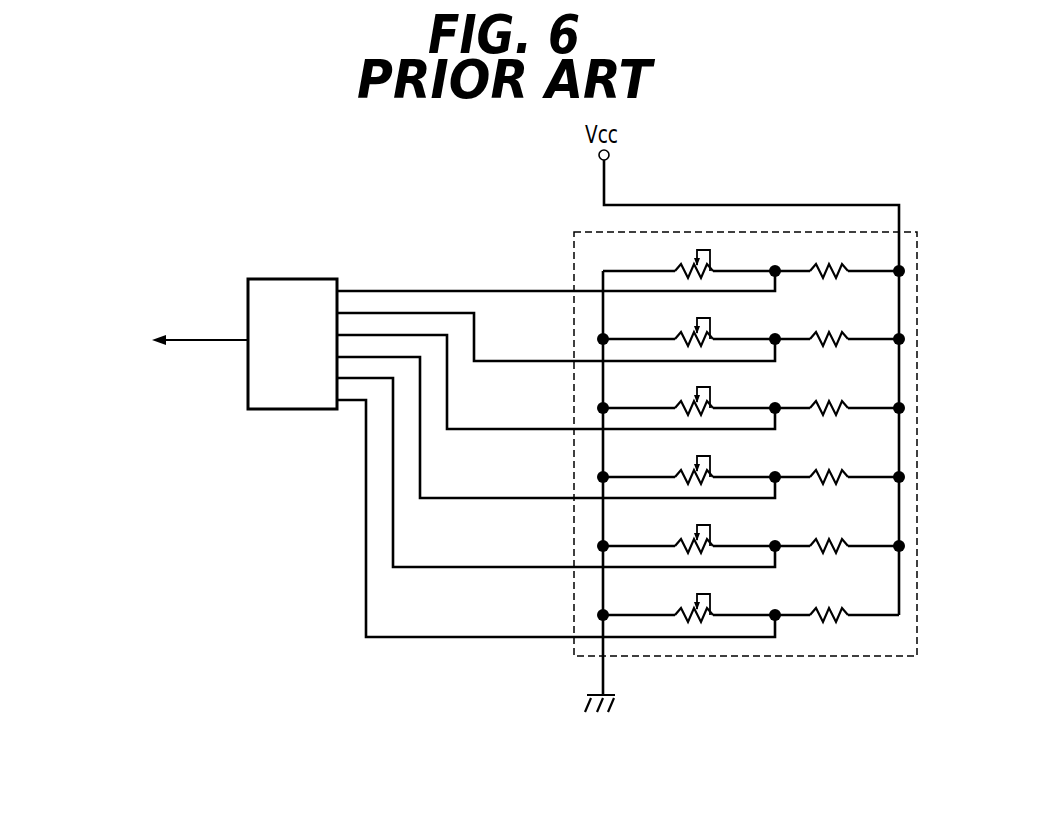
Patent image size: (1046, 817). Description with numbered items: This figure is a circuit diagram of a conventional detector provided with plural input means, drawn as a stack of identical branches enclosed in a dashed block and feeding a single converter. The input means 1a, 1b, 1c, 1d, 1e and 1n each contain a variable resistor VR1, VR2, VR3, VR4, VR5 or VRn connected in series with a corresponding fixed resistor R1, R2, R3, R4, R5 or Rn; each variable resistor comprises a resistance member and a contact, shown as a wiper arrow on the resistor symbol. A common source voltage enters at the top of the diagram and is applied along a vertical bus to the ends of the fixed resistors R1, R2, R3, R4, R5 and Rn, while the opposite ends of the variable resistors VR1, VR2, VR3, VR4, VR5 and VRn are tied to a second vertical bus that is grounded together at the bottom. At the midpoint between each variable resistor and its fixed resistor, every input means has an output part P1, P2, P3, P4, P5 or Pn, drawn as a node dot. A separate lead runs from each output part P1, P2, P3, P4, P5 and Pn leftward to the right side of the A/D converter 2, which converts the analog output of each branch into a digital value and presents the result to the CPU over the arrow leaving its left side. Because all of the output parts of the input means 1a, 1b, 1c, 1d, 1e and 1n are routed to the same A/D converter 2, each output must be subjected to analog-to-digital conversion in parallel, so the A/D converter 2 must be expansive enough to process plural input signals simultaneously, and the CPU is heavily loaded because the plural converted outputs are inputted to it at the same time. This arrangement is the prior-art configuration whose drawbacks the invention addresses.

The A/D converter 2 is at (312, 279).
The input means 1a is at (621, 271).
The input means 1b is at (621, 339).
The input means 1c is at (621, 389).
The input means 1d is at (621, 437).
The fifth variable resistor circuit (sensor unit) 1e is at (621, 480).
The input means 1n is at (618, 525).
The variable resistor VR1 is at (680, 257).
The variable resistor VR2 is at (680, 325).
The variable resistor VR3 is at (680, 394).
The variable resistor 4 VR4 is at (680, 463).
The variable resistor 5 VR5 is at (680, 532).
The variable resistor VRn is at (680, 602).
The fixed resistor R1 is at (829, 257).
The fixed resistor R2 is at (829, 325).
The fixed resistor R3 is at (829, 394).
The fixed resistor 4 R4 is at (829, 463).
The fixed resistor 5 R5 is at (829, 532).
The fixed resistor Rn is at (829, 602).
The output part P1 is at (782, 274).
The output part P2 is at (782, 342).
The output part P3 is at (782, 411).
The output node 4 P4 is at (782, 480).
The output node 5 P5 is at (782, 549).
The output part Pn is at (782, 618).